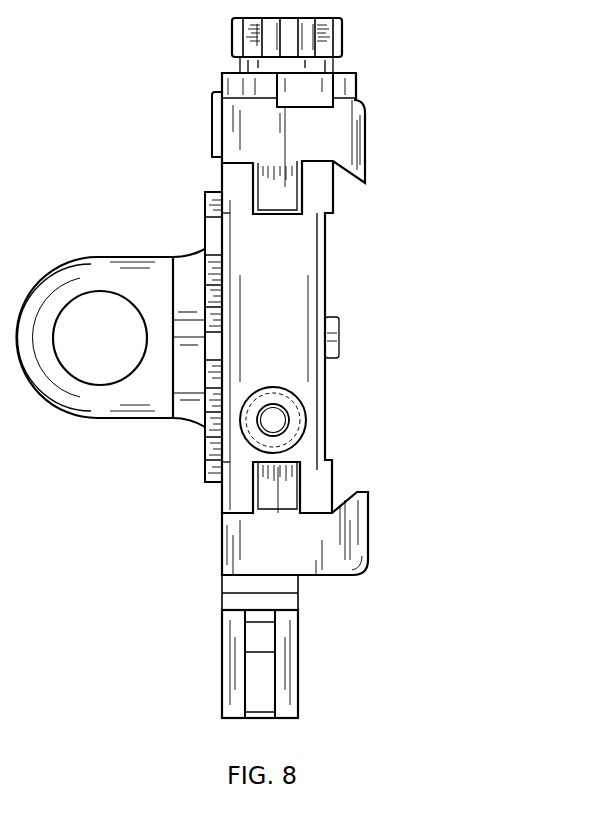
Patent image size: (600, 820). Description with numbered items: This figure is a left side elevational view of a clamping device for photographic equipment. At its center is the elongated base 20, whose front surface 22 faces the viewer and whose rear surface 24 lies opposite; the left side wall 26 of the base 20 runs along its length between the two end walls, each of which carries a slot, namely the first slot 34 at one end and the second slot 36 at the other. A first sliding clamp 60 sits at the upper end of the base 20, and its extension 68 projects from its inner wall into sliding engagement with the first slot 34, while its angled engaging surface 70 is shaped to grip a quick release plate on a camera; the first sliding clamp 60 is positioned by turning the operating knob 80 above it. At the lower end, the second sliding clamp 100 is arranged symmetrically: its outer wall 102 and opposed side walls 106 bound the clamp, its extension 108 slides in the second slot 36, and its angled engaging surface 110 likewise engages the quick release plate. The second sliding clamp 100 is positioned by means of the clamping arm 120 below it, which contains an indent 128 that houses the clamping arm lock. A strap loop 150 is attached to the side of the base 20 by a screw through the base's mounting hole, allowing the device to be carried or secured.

The base 20 is at (261, 338).
The front surface 22 is at (330, 388).
The rear surface 24 is at (222, 338).
The left side wall 26 is at (310, 268).
The first slot 34 is at (262, 217).
The second slot 36 is at (223, 465).
The first sliding clamp 60 is at (306, 142).
The extension 68 is at (259, 190).
The engaging surface 70 is at (363, 183).
The operating knob 80 is at (345, 38).
The second sliding clamp 100 is at (262, 562).
The outer wall 102 is at (335, 578).
The side walls 106 is at (232, 537).
The extension 108 is at (259, 492).
The engaging surface 110 is at (357, 492).
The clamping arm 120 is at (290, 710).
The indent 128 is at (243, 672).
The strap loop 150 is at (97, 418).